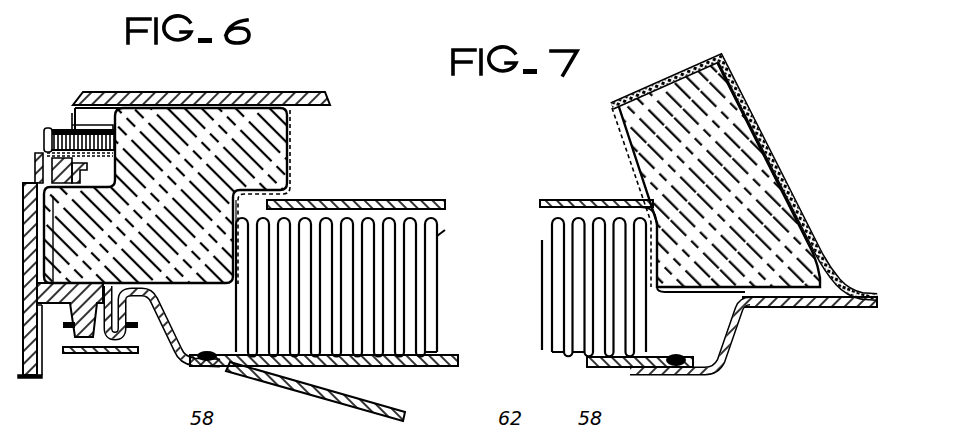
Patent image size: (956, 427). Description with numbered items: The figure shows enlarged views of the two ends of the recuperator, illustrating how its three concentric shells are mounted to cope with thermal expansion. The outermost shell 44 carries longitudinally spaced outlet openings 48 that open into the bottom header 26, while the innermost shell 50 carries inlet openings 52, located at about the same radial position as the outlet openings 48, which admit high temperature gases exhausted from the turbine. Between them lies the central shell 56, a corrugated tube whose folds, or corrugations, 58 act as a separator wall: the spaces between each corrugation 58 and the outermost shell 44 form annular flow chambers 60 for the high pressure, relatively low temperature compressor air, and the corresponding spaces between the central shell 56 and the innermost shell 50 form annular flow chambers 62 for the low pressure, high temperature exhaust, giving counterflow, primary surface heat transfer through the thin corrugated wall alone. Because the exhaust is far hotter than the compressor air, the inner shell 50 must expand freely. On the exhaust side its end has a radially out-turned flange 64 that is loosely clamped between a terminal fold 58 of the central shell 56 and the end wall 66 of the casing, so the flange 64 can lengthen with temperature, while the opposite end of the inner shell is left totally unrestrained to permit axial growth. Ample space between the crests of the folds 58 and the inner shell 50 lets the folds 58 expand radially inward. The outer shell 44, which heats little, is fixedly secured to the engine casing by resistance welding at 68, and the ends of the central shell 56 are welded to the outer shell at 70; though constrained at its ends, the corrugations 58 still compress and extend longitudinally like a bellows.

In FIG. 6, the bottom header 26 is at (340, 400).
In FIG. 6, the outermost shell 44 is at (393, 366).
In FIG. 7, the outermost shell 44 is at (613, 367).
In FIG. 6, the outlet openings 48 is at (336, 366).
In FIG. 6, the innermost shell 50 is at (396, 200).
In FIG. 7, the innermost shell 50 is at (563, 200).
In FIG. 6, the inlet openings 52 is at (350, 200).
In FIG. 6, the central shell 56 is at (446, 231).
In FIG. 7, the central shell 56 is at (690, 422).
In FIG. 6, the corrugation 58 is at (303, 217).
In FIG. 7, the corrugation 58 is at (548, 353).
In FIG. 6, the annular flow chambers 60 is at (434, 345).
In FIG. 7, the annular flow chambers 60 is at (582, 348).
In FIG. 6, the annular flow chambers 62 is at (378, 312).
In FIG. 7, the annular flow chambers 62 is at (590, 225).
In FIG. 7, the radially out-turned flange 64 is at (655, 290).
In FIG. 7, the end wall 66 is at (760, 167).
In FIG. 6, the weld 68 is at (210, 362).
In FIG. 7, the weld 68 is at (668, 376).
In FIG. 6, the weld 70 is at (205, 353).
In FIG. 7, the weld 70 is at (668, 355).